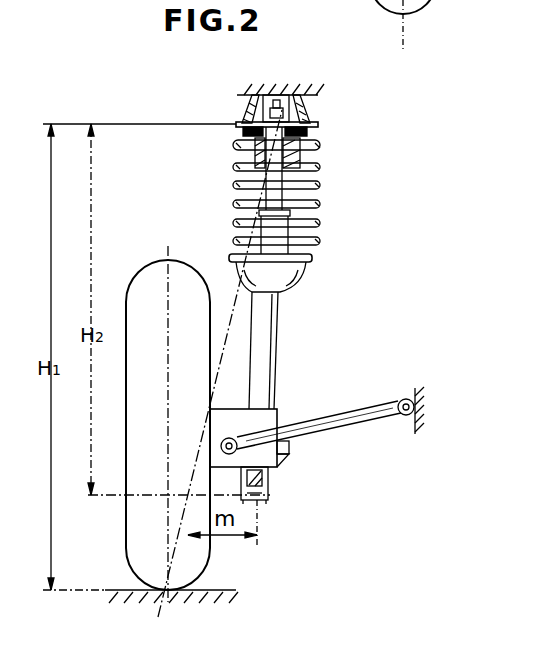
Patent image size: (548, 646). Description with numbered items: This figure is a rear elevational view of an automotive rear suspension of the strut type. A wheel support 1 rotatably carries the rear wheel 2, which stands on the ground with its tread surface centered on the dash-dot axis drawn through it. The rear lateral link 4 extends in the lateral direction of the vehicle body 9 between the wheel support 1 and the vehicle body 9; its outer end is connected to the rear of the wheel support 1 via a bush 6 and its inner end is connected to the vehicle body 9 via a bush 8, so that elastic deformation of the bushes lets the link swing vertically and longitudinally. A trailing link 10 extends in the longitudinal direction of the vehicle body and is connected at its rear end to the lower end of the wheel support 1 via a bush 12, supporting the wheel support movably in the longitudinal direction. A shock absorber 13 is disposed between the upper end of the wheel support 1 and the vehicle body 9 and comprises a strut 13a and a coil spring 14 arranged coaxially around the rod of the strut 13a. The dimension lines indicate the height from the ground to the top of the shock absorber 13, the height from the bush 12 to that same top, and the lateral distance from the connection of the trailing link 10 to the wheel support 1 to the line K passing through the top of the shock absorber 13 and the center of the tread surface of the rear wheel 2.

The wheel support 1 is at (278, 418).
The rear wheel 2 is at (143, 265).
The rear lateral link 4 is at (340, 427).
The bush 6 is at (229, 437).
The bush 8 is at (403, 416).
The vehicle body 9 is at (318, 102).
The trailing link 10 is at (268, 478).
The bush 12 is at (258, 503).
The shock absorber 13 is at (318, 265).
The strut 13a is at (276, 338).
The coil spring 14 is at (320, 186).
The kingpin axis K is at (205, 341).